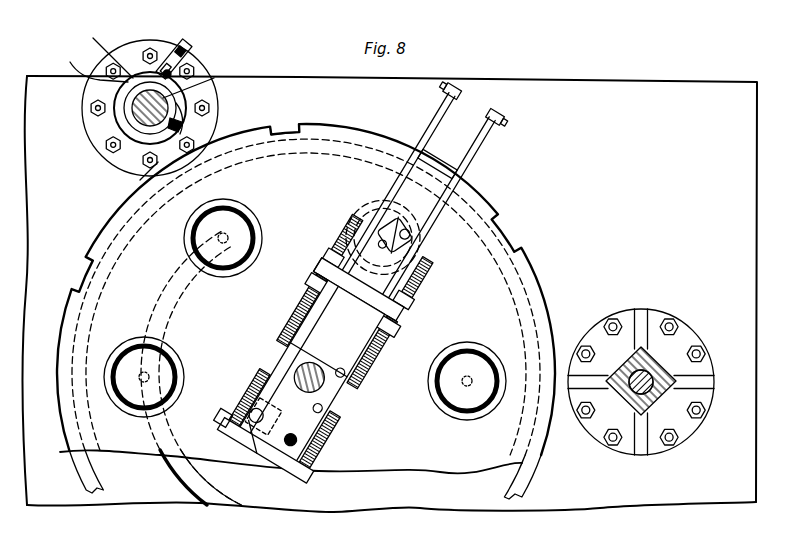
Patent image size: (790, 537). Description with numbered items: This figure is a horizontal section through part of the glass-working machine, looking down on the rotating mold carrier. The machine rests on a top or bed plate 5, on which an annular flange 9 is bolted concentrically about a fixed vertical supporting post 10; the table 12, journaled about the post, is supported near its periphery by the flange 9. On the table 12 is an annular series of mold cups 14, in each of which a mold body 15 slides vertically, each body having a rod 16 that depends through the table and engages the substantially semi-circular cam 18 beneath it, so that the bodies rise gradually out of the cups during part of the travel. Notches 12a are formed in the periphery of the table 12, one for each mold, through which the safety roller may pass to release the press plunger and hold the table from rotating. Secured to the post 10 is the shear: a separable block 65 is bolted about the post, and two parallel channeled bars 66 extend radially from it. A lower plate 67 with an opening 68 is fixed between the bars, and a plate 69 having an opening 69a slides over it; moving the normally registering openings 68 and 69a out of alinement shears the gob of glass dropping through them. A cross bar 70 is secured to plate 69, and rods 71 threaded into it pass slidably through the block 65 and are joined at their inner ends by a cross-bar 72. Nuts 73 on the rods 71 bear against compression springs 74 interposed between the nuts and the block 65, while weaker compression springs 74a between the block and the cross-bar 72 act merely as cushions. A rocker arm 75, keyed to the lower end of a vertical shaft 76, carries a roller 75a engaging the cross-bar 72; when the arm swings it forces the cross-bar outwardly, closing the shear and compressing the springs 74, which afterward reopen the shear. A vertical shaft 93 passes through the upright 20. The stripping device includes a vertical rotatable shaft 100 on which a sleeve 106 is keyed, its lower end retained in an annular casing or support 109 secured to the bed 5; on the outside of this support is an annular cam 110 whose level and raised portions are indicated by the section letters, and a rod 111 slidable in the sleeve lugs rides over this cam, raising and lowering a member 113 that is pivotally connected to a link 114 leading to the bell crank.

The top or bed plate 5 is at (705, 498).
The annular flange 9 is at (92, 479).
The fixed vertical supporting post 10 is at (333, 405).
The table 12 is at (551, 333).
The notches 12a is at (287, 125).
The mold cups 14 is at (259, 228).
The mold body 15 is at (194, 240).
The rod 16 is at (231, 216).
The semi-circular cam 18 is at (195, 489).
The upright 20 is at (652, 372).
The separable block 65 is at (216, 356).
The channeled bars 66 is at (434, 130).
The lower plate 67 is at (430, 172).
The opening 68 is at (382, 228).
The plate 69 is at (430, 224).
The opening 69a is at (426, 268).
The cross bar 70 is at (401, 308).
The rods 71 is at (343, 246).
The cross-bar 72 is at (306, 472).
The nuts 73 is at (318, 275).
The compression springs 74 is at (298, 303).
The weaker compression springs 74a is at (253, 406).
The rocker arm 75 is at (262, 440).
The roller 75a is at (256, 437).
The vertical shaft 76 is at (290, 447).
The vertical shaft 93 is at (660, 395).
The vertical rotatable shaft 100 is at (140, 112).
The sleeve 106 is at (168, 97).
The annular casing or support 109 is at (143, 86).
The annular cam 110 is at (190, 121).
The rod 111 is at (167, 70).
The member 113 is at (192, 60).
The link 114 is at (185, 47).